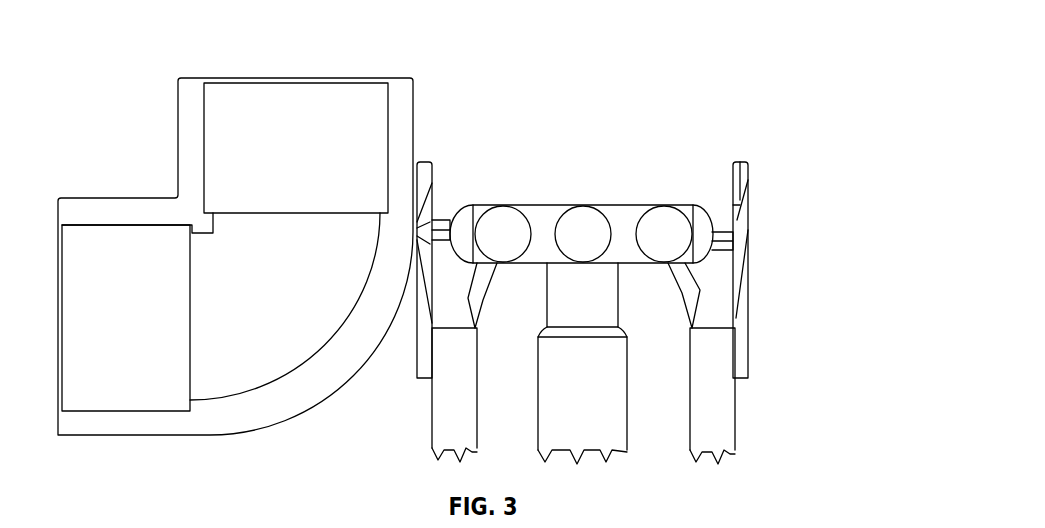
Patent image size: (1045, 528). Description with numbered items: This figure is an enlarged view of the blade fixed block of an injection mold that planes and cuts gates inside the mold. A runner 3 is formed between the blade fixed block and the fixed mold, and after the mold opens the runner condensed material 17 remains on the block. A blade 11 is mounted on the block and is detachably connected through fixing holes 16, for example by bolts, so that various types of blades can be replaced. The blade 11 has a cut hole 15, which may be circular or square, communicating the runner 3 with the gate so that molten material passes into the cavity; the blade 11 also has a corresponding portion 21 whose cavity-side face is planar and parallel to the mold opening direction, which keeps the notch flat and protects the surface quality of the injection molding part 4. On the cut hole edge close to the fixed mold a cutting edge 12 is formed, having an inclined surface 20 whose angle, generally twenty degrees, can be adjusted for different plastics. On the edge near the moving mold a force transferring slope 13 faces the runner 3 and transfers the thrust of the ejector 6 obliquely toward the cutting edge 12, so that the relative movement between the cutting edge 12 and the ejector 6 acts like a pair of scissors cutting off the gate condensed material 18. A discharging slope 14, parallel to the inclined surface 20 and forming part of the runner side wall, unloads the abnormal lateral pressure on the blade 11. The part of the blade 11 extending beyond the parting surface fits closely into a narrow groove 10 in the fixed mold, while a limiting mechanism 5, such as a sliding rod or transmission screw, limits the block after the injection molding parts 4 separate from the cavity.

The runner 3 is at (707, 250).
The injection molding part 4 is at (210, 437).
The limiting mechanism 5 is at (578, 383).
The ejector 6 is at (712, 380).
The narrow groove 10 is at (748, 162).
The blade 11 is at (417, 373).
The cutting edge 12 is at (750, 221).
The force transferring slope 13 is at (743, 288).
The discharging slope 14 is at (678, 292).
The cut hole 15 is at (417, 243).
The fixing hole 16 is at (454, 395).
The runner condensed material 17 is at (463, 227).
The gate condensed material 18 is at (417, 223).
The inclined surface 20 is at (735, 197).
The corresponding portion 21 is at (750, 200).